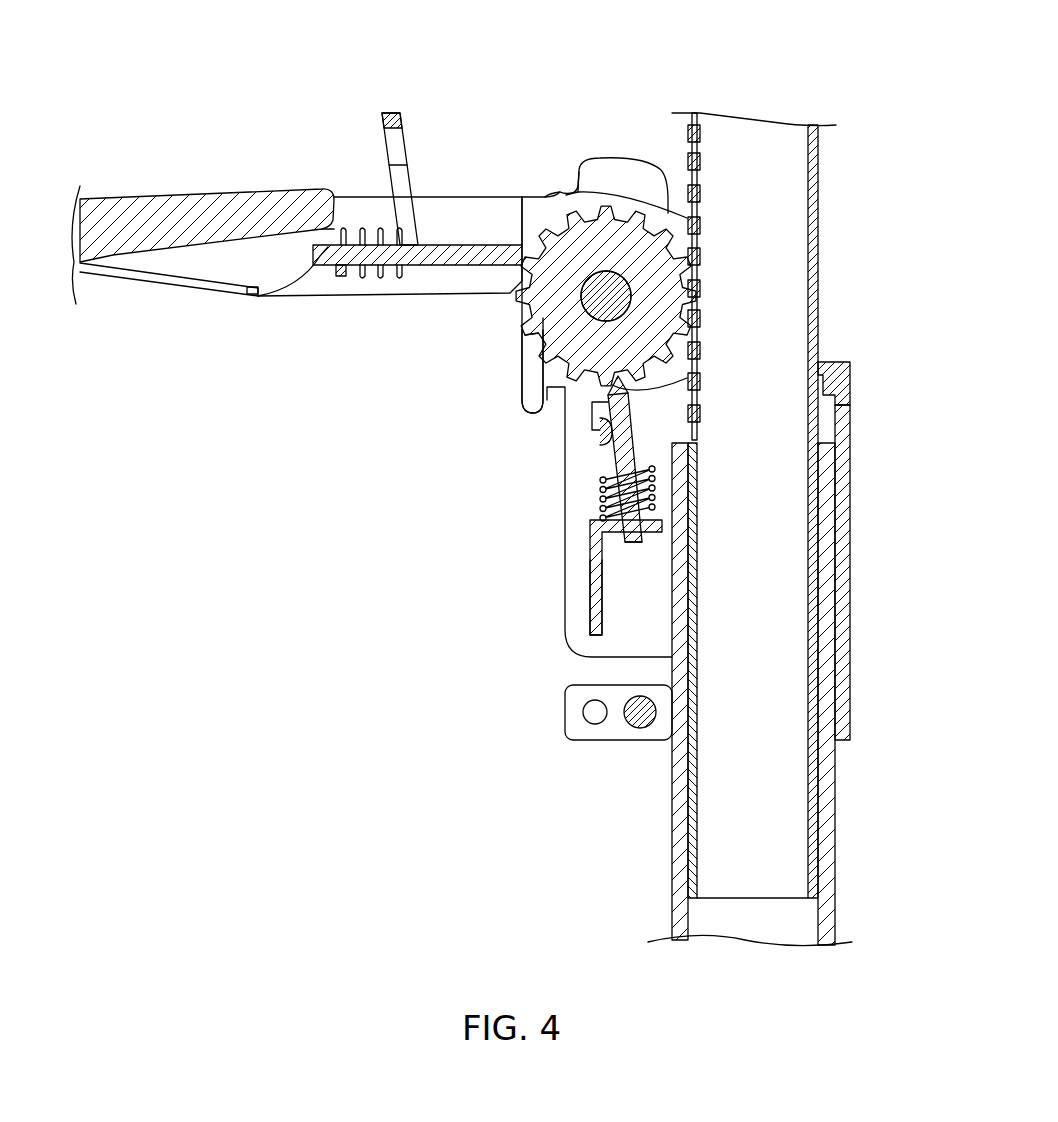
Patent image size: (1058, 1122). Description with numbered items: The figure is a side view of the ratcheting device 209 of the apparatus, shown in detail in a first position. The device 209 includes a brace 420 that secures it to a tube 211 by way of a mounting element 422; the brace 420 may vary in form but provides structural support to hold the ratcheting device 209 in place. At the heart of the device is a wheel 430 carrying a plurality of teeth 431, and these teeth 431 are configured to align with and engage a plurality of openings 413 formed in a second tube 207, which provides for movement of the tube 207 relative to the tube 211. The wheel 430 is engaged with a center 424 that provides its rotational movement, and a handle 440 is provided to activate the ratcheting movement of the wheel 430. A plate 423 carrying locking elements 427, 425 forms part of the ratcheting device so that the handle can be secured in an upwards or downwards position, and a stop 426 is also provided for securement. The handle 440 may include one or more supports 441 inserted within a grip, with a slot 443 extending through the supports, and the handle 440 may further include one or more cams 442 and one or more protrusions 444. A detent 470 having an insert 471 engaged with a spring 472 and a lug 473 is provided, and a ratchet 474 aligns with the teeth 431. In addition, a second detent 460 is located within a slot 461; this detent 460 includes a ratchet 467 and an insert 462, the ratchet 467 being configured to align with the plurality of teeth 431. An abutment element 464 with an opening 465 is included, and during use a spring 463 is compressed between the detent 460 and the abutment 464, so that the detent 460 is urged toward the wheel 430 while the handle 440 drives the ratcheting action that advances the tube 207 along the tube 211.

The ratcheting device 209 is at (262, 74).
The tube 207 is at (820, 183).
The tube 211 is at (836, 806).
The openings 413 is at (704, 135).
The brace 420 is at (850, 432).
The mounting element 422 is at (614, 740).
The plate 423 is at (632, 166).
The center 424 is at (582, 326).
The locking element 425 is at (540, 402).
The stop 426 is at (524, 232).
The locking element 427 is at (574, 186).
The wheel 430 is at (508, 293).
The teeth 431 is at (537, 351).
The handle 440 is at (220, 200).
The supports 441 is at (383, 293).
The cams 442 is at (618, 308).
The slot 443 is at (443, 242).
The protrusions 444 is at (338, 278).
The detent 460 is at (606, 432).
The slot 461 is at (598, 422).
The insert 462 is at (636, 545).
The spring 463 is at (600, 502).
The abutment element 464 is at (594, 604).
The opening 465 is at (622, 538).
The ratchet 467 is at (626, 386).
The detent 470 is at (400, 279).
The insert 471 is at (321, 230).
The spring 472 is at (361, 228).
The lug 473 is at (395, 110).
The ratchet 474 is at (494, 243).